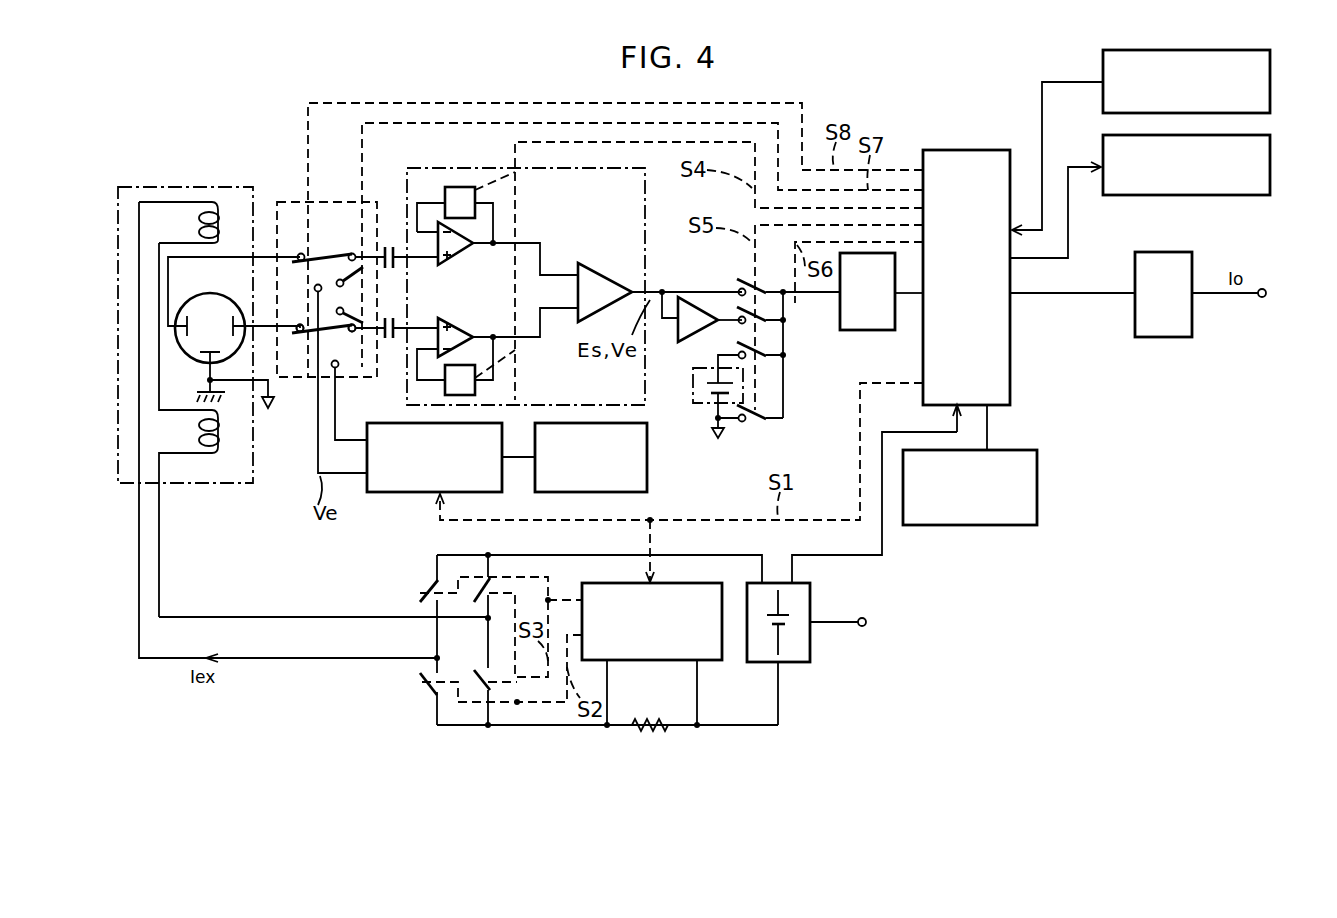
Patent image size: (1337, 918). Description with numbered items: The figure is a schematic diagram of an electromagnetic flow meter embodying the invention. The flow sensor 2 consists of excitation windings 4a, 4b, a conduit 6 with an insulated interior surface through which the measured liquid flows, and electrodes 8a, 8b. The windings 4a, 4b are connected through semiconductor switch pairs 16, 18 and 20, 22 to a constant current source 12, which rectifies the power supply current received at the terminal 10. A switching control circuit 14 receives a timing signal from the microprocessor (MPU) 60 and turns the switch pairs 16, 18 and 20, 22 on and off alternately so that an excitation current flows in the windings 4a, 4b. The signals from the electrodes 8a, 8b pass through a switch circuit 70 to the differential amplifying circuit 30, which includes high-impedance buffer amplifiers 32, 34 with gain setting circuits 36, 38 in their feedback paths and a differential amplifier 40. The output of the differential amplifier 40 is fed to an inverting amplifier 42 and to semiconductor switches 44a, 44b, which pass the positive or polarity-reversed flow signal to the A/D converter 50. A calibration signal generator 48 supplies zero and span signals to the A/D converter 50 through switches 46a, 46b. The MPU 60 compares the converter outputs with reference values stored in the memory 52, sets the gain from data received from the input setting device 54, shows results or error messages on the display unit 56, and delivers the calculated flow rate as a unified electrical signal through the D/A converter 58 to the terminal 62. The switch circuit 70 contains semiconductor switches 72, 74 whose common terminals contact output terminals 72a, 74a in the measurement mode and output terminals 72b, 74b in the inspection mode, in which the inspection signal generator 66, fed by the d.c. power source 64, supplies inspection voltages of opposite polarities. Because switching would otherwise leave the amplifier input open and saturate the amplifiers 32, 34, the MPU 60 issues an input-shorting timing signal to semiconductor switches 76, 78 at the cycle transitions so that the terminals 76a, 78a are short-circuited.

The flow sensor 2 is at (205, 187).
The excitation winding 4a is at (222, 212).
The excitation winding 4b is at (224, 455).
The conduit 6 is at (196, 300).
The electrode 8a is at (186, 348).
The electrode 8b is at (243, 323).
The terminal 10 is at (862, 617).
The constant current source 12 is at (803, 663).
The switching control circuit 14 is at (672, 661).
The semiconductor switch 16 is at (483, 588).
The semiconductor switch 18 is at (420, 680).
The semiconductor switch 20 is at (420, 598).
The semiconductor switch 22 is at (478, 690).
The differential amplifying circuit 30 is at (437, 167).
The buffer amplifier 32 is at (460, 248).
The buffer amplifier 34 is at (455, 330).
The gain setting circuit 36 is at (472, 187).
The gain setting circuit 38 is at (477, 383).
The differential amplifier 40 is at (597, 277).
The inverting amplifier 42 is at (681, 342).
The semiconductor switch 44a is at (746, 282).
The semiconductor switch 44b is at (765, 310).
The switch 46a is at (765, 347).
The switch 46b is at (765, 412).
The calibration signal generator 48 is at (695, 403).
The A/D converter 50 is at (873, 331).
The memory 52 is at (1038, 483).
The input setting device 54 is at (1270, 62).
The display unit 56 is at (1270, 163).
The D/A converter 58 is at (1167, 338).
The microprocessor (MPU) 60 is at (962, 152).
The output terminal 62 is at (1262, 298).
The d.c. power source 64 is at (647, 470).
The inspection signal generator 66 is at (383, 494).
The switch circuit 70 is at (278, 202).
The semiconductor switch 72 is at (338, 256).
The output terminal 72a is at (301, 253).
The output terminal 72b is at (315, 287).
The semiconductor switch 74 is at (308, 333).
The output terminal 74a is at (300, 331).
The output terminal 74b is at (333, 367).
The semiconductor switch 76 is at (352, 278).
The terminal 76a is at (353, 253).
The semiconductor switch 78 is at (352, 308).
The terminal 78a is at (355, 331).